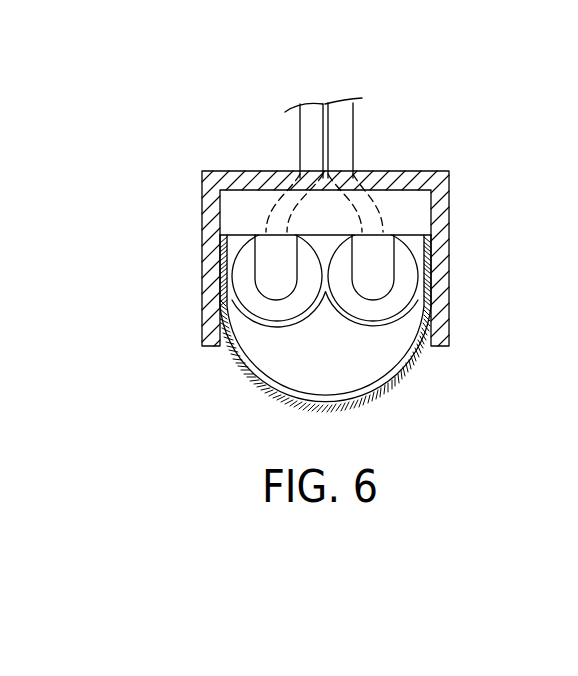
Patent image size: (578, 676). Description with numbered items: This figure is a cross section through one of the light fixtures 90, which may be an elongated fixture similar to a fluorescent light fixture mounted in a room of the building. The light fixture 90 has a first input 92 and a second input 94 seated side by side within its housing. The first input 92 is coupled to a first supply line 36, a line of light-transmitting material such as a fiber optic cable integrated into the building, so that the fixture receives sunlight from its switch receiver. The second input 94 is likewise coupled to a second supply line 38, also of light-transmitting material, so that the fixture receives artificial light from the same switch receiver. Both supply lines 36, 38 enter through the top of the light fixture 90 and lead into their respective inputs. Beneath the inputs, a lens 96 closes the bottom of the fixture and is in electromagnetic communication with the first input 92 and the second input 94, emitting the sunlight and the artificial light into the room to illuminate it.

The first supply line 36 is at (300, 143).
The second supply line 38 is at (348, 140).
The light fixture 90 is at (203, 172).
The first input 92 is at (276, 235).
The second input 94 is at (373, 235).
The lens 96 is at (385, 392).